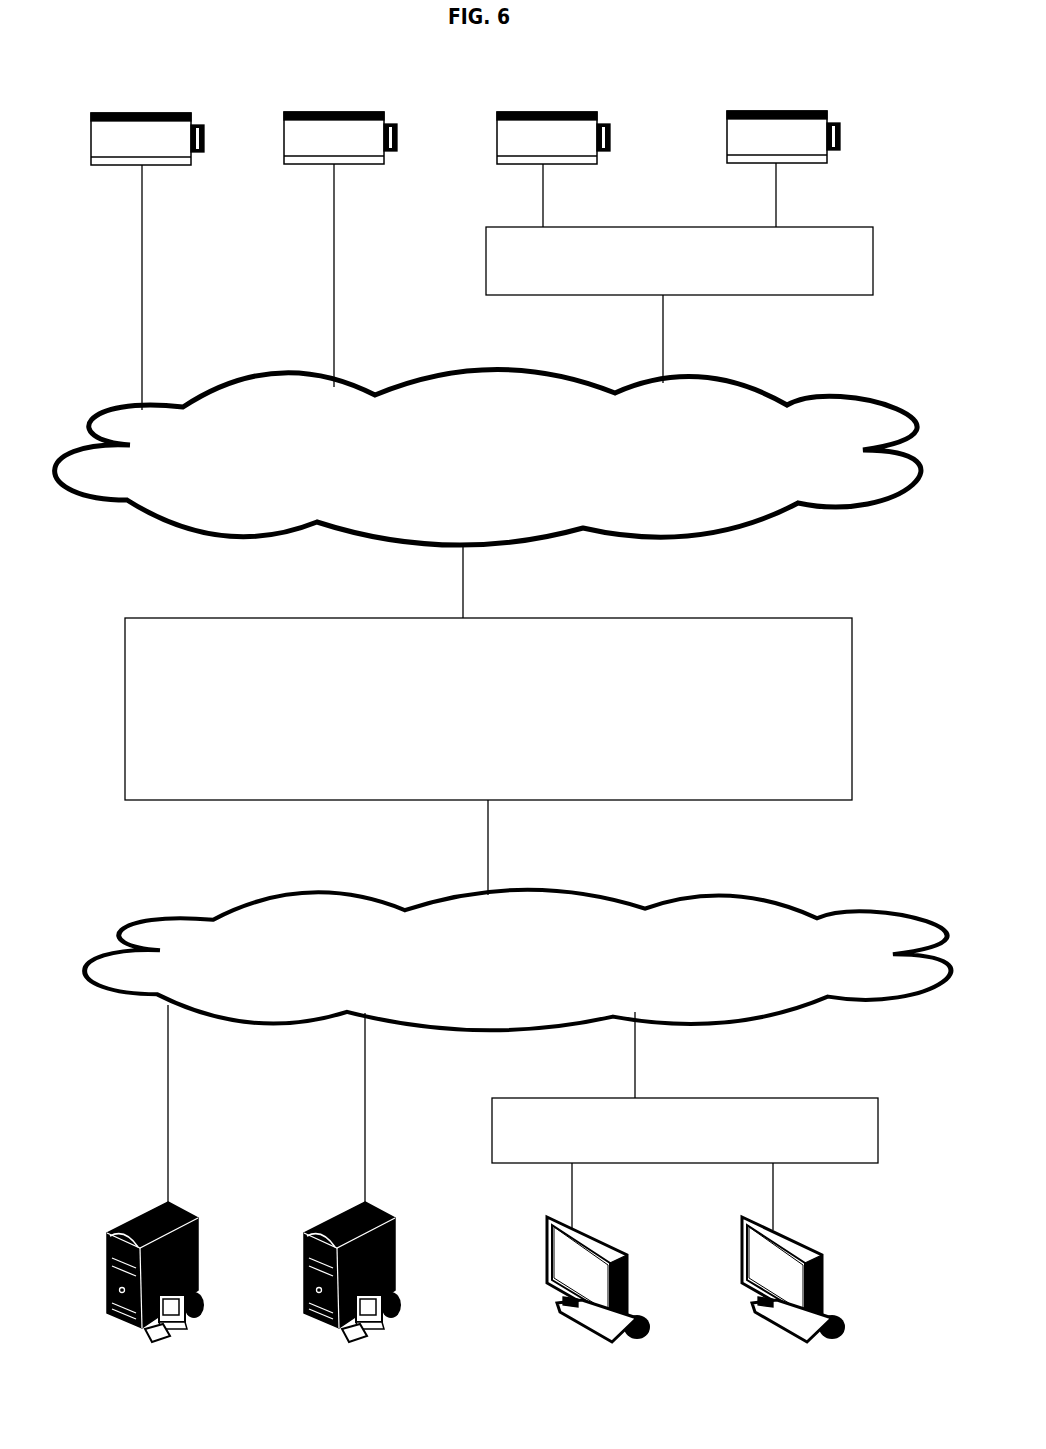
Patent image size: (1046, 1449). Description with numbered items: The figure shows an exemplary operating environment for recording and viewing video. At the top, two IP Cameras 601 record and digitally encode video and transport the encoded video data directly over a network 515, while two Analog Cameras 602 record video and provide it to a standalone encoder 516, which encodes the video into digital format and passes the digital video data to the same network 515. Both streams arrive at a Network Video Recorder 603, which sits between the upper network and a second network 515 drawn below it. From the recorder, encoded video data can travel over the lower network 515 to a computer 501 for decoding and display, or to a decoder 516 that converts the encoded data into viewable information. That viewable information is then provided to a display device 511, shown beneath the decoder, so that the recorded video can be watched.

The IP camera 601 is at (176, 113).
The analog camera 602 is at (573, 112).
The encoder/decoder 516 is at (858, 287).
The network 515 is at (606, 470).
The Network Video Recorder 603 is at (833, 792).
The computer 501 is at (178, 1209).
The display device 511 is at (595, 1229).